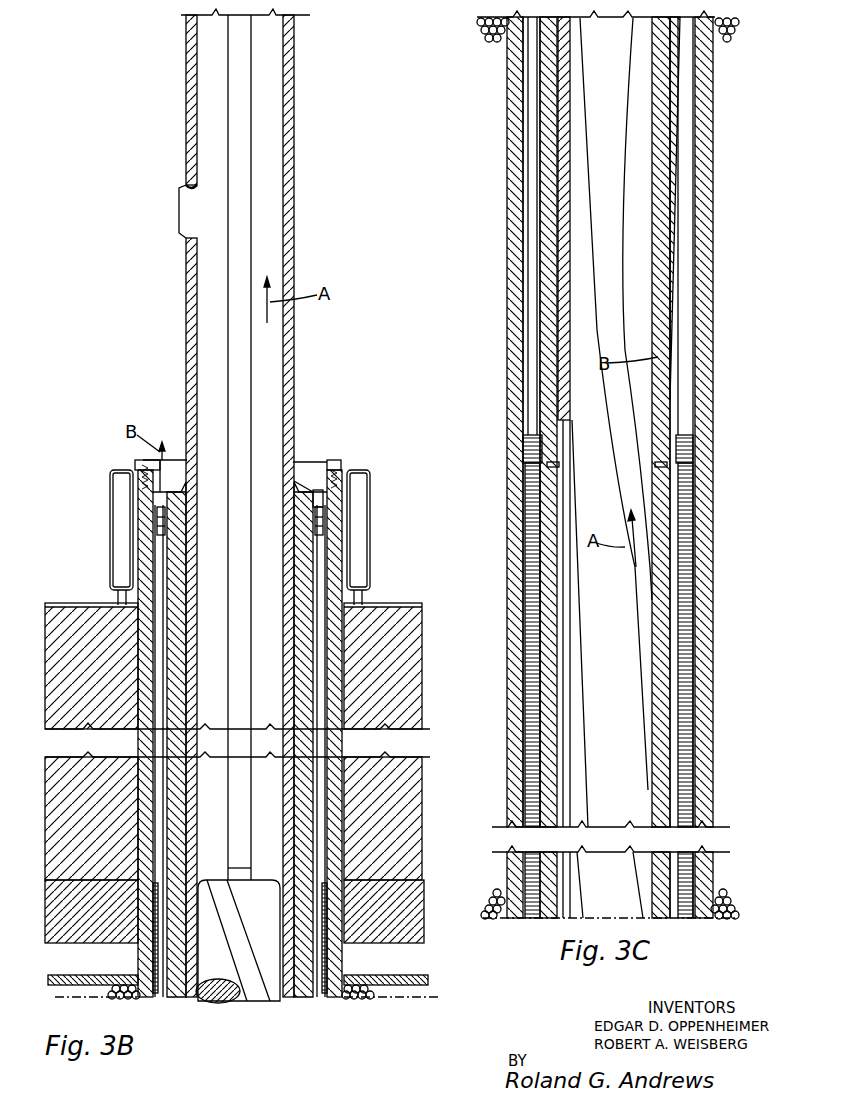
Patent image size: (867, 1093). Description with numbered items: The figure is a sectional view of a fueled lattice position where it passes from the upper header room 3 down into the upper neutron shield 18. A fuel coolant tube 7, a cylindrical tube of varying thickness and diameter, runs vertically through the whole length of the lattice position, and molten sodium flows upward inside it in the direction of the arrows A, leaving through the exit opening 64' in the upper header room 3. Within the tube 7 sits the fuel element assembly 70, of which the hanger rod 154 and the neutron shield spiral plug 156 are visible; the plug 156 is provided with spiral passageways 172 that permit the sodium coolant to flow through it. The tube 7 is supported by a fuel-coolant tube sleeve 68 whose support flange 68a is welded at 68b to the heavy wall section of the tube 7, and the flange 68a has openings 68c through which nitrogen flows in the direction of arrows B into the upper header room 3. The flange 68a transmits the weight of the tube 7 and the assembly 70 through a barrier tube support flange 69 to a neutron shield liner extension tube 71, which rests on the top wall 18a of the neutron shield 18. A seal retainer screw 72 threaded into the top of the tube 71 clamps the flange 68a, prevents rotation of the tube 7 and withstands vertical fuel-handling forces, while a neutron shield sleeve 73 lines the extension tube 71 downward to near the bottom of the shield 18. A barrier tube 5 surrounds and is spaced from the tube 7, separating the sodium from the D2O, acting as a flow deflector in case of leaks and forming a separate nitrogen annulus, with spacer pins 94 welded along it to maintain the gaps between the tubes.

In FIG. 3B, the fuel coolant tube 7 is at (293, 125).
In FIG. 3C, the fuel coolant tube 7 is at (652, 230).
In FIG. 3B, the fuel element assembly 70 is at (258, 177).
In FIG. 3B, the hanger rod 154 is at (252, 240).
In FIG. 3B, the opening 64' is at (151, 196).
In FIG. 3B, the upper header room 3 is at (87, 324).
In FIG. 3B, the barrier tube 5 is at (318, 602).
In FIG. 3C, the barrier tube 5 is at (677, 635).
In FIG. 3B, the upper neutron shield 18 is at (412, 997).
In FIG. 3C, the upper neutron shield 18 is at (753, 206).
In FIG. 3B, the top wall 18a is at (425, 900).
In FIG. 3B, the fuel-coolant tube sleeve 68 is at (167, 602).
In FIG. 3C, the fuel-coolant tube sleeve 68 is at (680, 100).
In FIG. 3B, the support flange 68a is at (316, 490).
In FIG. 3B, the weld 68b is at (307, 498).
In FIG. 3B, the openings 68c is at (372, 487).
In FIG. 3B, the barrier tube support flange 69 is at (333, 513).
In FIG. 3B, the neutron shield liner extension tube 71 is at (335, 543).
In FIG. 3C, the neutron shield liner extension tube 71 is at (713, 477).
In FIG. 3B, the seal retainer screw 72 is at (331, 452).
In FIG. 3B, the neutron shield sleeve 73 is at (327, 957).
In FIG. 3C, the neutron shield sleeve 73 is at (697, 318).
In FIG. 3B, the spacer pins 94 is at (195, 557).
In FIG. 3C, the spacer pins 94 is at (652, 480).
In FIG. 3B, the neutron shield spiral plug 156 is at (273, 1000).
In FIG. 3B, the spiral passageways 172 is at (241, 1003).
In FIG. 3C, the spiral passageways 172 is at (596, 308).